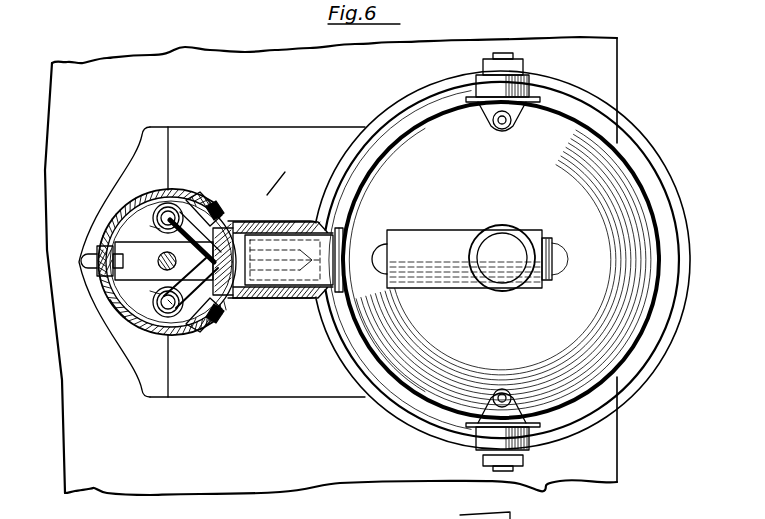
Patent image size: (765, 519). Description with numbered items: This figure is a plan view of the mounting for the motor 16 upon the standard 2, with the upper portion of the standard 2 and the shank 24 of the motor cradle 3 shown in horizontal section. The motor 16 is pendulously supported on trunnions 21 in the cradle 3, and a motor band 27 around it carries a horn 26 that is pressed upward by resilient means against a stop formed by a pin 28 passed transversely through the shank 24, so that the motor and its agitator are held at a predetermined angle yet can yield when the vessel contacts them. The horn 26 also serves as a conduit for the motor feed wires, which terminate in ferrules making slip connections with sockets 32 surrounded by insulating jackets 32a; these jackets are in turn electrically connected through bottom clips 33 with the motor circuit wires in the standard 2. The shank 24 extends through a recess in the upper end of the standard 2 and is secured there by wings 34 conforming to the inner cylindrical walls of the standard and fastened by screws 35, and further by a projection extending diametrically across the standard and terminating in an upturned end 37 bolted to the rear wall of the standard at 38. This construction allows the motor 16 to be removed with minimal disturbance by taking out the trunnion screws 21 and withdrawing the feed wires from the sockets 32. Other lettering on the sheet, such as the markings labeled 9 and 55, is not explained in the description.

The standard 2 is at (150, 205).
The cradle 3 is at (656, 160).
The recess in plate 9 is at (315, 140).
The motor 16 is at (451, 231).
The trunnions 21 is at (528, 74).
The shank 24 is at (235, 243).
The horn 26 is at (292, 236).
The motor band 27 is at (662, 258).
The pin 28 is at (256, 298).
The sockets 32 is at (181, 228).
The insulating jackets 32a is at (142, 259).
The bottom clips 33 is at (186, 262).
The wings 34 is at (198, 205).
The screws 35 is at (218, 310).
The upturned end 37 is at (110, 288).
The bolt 38 is at (96, 256).
The stop block 55 is at (216, 216).